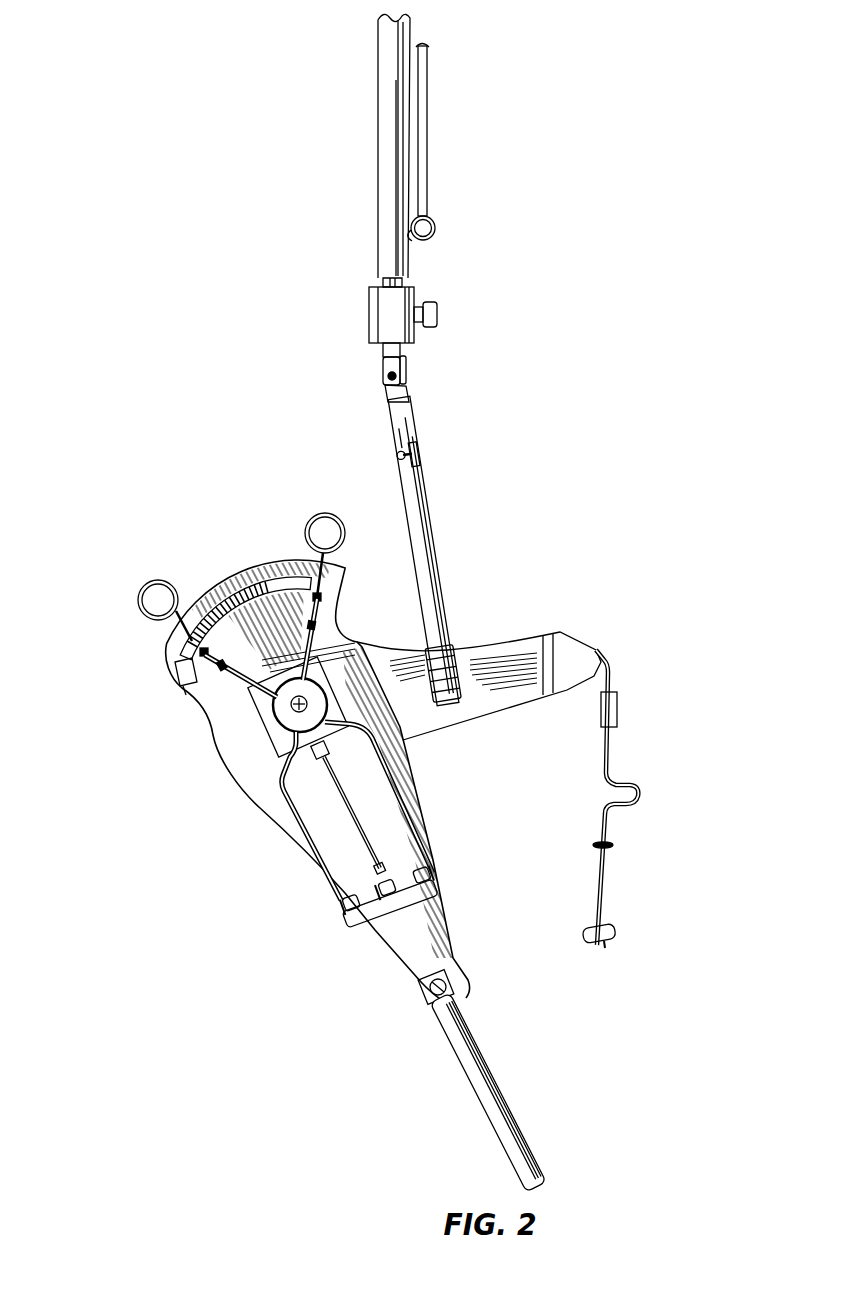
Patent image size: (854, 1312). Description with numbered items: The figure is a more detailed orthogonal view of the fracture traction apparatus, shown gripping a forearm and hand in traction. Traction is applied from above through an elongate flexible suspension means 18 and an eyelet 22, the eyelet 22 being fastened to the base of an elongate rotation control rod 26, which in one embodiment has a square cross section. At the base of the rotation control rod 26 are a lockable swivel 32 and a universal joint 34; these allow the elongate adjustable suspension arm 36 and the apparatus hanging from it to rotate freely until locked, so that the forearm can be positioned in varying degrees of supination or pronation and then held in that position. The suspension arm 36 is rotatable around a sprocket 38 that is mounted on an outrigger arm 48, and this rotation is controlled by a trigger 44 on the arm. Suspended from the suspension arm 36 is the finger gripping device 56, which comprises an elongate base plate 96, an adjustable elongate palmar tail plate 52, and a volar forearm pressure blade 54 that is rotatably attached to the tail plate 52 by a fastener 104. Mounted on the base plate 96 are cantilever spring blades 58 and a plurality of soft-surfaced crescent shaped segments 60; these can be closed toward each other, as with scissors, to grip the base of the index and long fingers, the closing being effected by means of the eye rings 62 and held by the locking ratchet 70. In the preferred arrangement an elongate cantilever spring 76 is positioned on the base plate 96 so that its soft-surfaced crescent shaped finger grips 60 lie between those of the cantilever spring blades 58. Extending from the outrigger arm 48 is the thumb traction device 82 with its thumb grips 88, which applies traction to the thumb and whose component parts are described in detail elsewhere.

The elongate flexible suspension means 18 is at (428, 98).
The eyelet 22 is at (436, 230).
The rotation control rod 26 is at (385, 150).
The lockable swivel 32 is at (415, 295).
The universal joint 34 is at (405, 380).
The elongate adjustable suspension arm 36 is at (432, 518).
The sprocket 38 is at (458, 673).
The trigger 44 is at (388, 455).
The outrigger arm 48 is at (535, 638).
The adjustable elongate palmar tail plate 52 is at (384, 953).
The volar forearm pressure blade 54 is at (460, 1078).
The finger gripping device 56 is at (232, 842).
The cantilever spring blades 58 is at (393, 778).
The soft-surfaced crescent shaped segments 60 is at (440, 872).
The eye rings 62 is at (312, 520).
The locking ratchet 70 is at (220, 618).
The elongate cantilever spring 76 is at (367, 848).
The thumb traction device 82 is at (614, 748).
The thumb grips 88 is at (620, 915).
The elongate base plate 96 is at (230, 765).
The fastener 104 is at (432, 990).